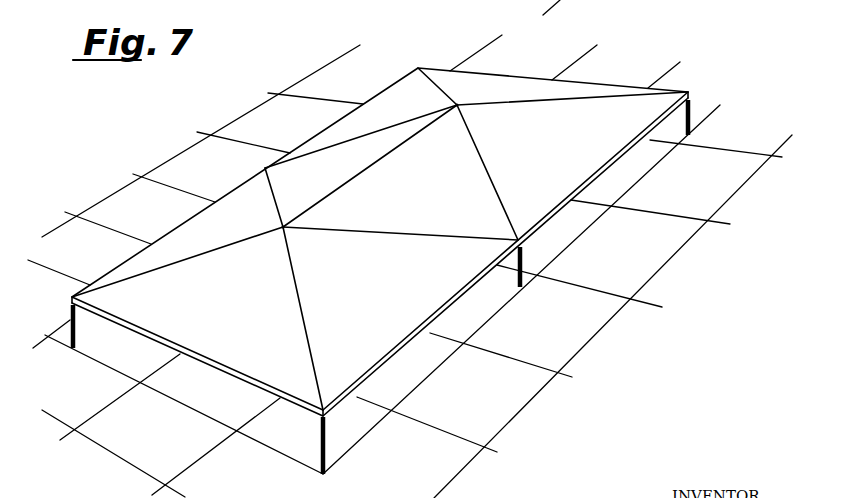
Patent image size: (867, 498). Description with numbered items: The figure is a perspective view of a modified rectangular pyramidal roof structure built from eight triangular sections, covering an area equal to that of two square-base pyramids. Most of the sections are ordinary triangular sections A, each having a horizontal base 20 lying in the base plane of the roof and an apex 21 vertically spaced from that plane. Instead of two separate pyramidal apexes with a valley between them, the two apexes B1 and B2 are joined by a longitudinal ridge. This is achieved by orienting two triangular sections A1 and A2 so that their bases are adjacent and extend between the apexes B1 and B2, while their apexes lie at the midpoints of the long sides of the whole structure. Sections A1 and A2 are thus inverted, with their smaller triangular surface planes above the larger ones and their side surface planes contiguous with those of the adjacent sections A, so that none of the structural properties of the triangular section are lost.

The base 20 is at (385, 156).
The apex 21 is at (265, 168).
The triangular section A is at (380, 105).
The inverted triangular section A1 is at (299, 172).
The inverted triangular section A2 is at (419, 180).
The apex B1 is at (282, 229).
The apex B2 is at (459, 107).